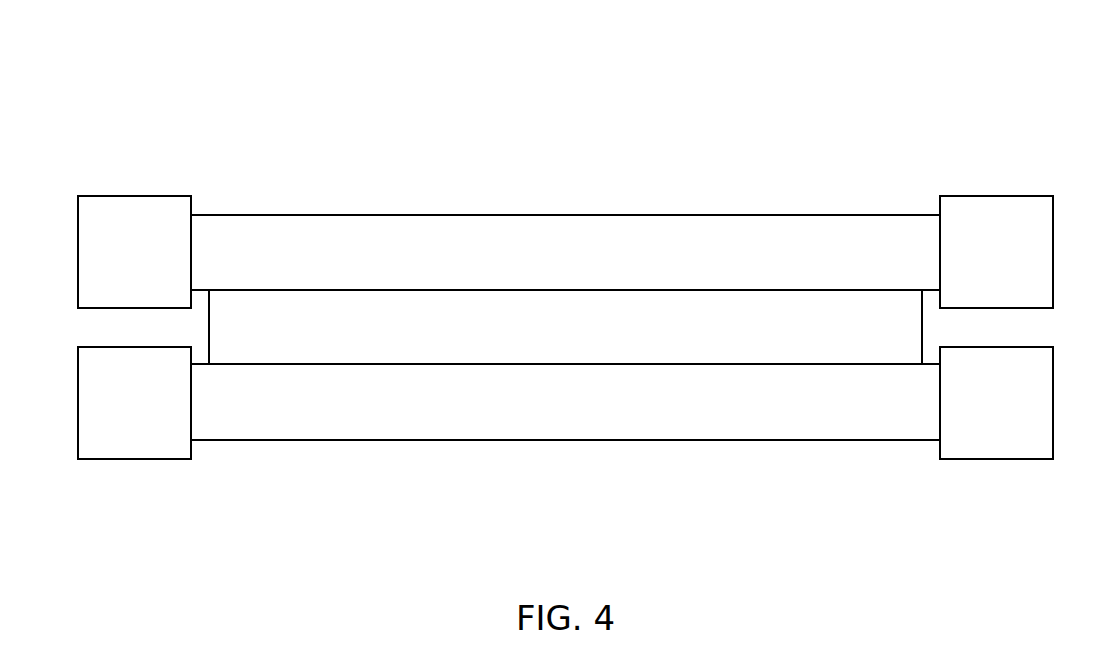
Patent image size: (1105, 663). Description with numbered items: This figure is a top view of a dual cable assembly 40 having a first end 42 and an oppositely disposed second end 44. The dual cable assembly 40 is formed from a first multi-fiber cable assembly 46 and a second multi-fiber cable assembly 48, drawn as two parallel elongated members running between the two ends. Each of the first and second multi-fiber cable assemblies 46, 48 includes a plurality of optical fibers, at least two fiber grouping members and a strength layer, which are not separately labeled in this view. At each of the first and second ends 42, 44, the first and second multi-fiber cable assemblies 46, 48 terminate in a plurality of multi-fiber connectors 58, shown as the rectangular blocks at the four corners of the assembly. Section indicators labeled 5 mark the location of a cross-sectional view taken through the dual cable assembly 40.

The dual cable assembly 40 is at (349, 102).
The first end 42 is at (238, 440).
The second end 44 is at (892, 215).
The first multi-fiber cable assembly 46 is at (453, 440).
The second multi-fiber cable assembly 48 is at (508, 215).
The multi-fiber connectors 58 is at (137, 196).
The section line 5- 5 is at (796, 327).